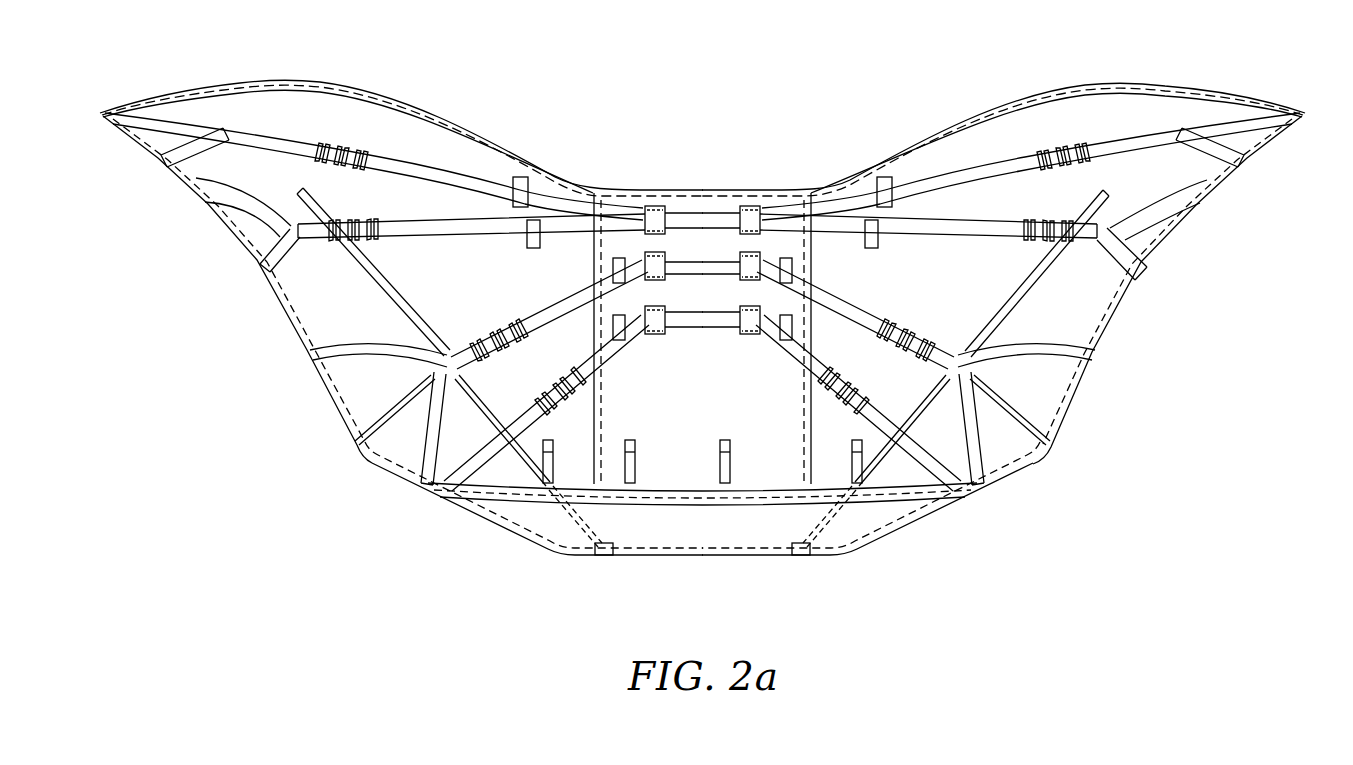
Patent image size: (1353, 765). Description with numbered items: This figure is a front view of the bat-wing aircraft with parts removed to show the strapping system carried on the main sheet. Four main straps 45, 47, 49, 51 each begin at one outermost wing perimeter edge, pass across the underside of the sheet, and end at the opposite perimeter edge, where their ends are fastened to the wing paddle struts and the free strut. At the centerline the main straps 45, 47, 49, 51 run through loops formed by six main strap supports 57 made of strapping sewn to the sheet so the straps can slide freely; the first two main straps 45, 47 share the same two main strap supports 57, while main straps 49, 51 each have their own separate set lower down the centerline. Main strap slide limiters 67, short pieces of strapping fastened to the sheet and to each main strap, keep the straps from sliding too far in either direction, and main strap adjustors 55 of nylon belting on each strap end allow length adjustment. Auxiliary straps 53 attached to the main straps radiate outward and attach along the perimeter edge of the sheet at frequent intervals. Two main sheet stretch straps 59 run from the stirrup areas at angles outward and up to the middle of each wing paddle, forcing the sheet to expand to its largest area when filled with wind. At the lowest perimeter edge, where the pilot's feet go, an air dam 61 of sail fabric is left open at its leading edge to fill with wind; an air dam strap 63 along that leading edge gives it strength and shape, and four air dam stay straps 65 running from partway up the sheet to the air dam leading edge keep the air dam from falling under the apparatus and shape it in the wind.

The main strap 45 is at (1285, 122).
The main strap 47 is at (1175, 236).
The main strap 49 is at (1053, 443).
The main strap 51 is at (918, 455).
The auxiliary strap 53 is at (415, 484).
The main strap adjustor 55 is at (547, 380).
The main strap support 57 is at (748, 335).
The main sheet stretch strap 59 is at (1038, 278).
The air dam 61 is at (698, 557).
The air dam strap 63 is at (455, 495).
The air dam stay strap 65 is at (854, 452).
The main strap slide limiter 67 is at (612, 328).